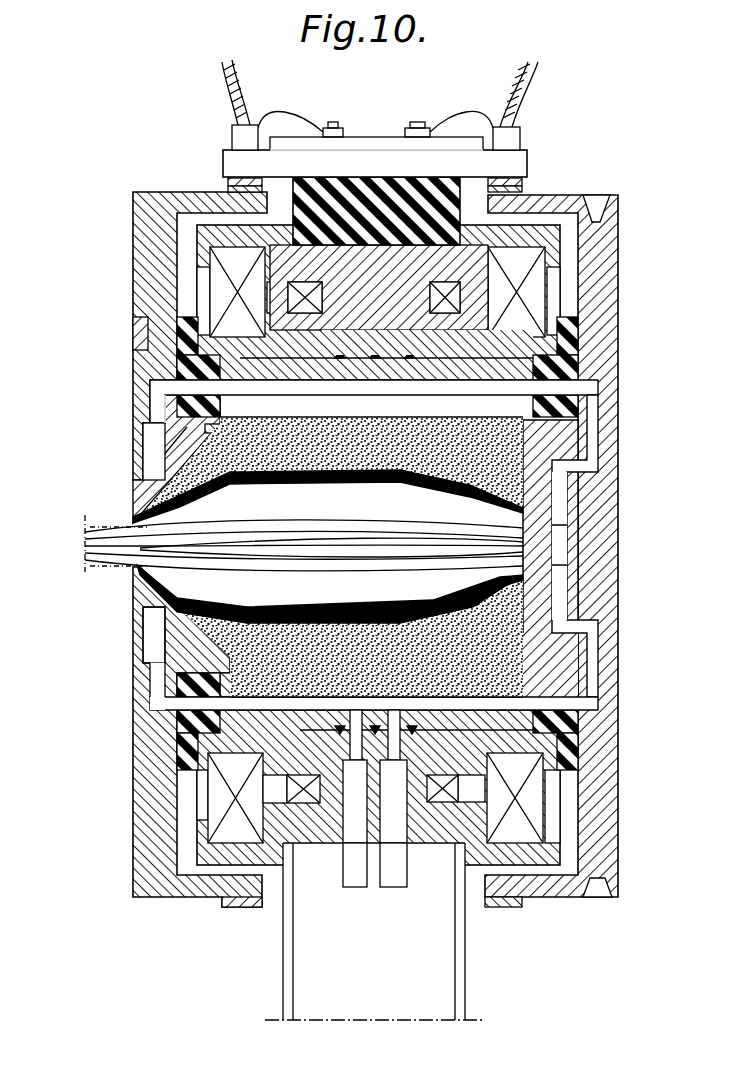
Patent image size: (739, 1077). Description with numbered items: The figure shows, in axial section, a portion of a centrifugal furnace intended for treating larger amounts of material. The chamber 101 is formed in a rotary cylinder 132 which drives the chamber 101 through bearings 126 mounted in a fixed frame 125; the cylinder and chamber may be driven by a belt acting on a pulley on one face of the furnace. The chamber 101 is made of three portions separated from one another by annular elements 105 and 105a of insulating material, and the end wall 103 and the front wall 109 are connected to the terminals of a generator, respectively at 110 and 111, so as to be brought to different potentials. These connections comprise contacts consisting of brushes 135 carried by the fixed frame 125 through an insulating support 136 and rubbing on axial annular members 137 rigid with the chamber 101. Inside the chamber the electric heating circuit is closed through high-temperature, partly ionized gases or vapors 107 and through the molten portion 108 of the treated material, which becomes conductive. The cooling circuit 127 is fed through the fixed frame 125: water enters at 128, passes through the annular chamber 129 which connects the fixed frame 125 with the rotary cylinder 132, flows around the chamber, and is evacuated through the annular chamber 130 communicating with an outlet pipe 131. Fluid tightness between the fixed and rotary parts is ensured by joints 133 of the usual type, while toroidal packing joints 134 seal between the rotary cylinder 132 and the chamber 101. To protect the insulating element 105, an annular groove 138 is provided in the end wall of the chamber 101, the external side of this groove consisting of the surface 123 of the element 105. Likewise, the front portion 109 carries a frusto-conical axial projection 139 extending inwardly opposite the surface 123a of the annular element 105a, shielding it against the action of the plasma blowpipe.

The chamber 101 is at (430, 410).
The end wall 103 is at (532, 517).
The annular element of insulating material 105 is at (578, 337).
The annular element of insulating material 105a is at (180, 328).
The gases or vapors 107 is at (283, 528).
The molten portion of the treated material 108 is at (280, 608).
The front wall 109 is at (140, 464).
The connection contact 110 is at (505, 122).
The connection contact 111 is at (250, 122).
The surface of insulating annular element 123 is at (598, 426).
The surface of annular element 123a is at (163, 388).
The fixed frame 125 is at (417, 258).
The bearings 126 is at (435, 286).
The cooling circuit 127 is at (558, 585).
The water inlet 128 is at (357, 862).
The annular chamber 129 is at (360, 778).
The annular chamber 130 is at (393, 780).
The outlet pipe 131 is at (393, 863).
The rotary cylinder 132 is at (455, 338).
The joints 133 is at (302, 797).
The toroidal packing joints 134 is at (412, 728).
The brushes 135 is at (232, 181).
The insulating support 136 is at (364, 188).
The axial annular members 137 is at (232, 190).
The annular groove 138 is at (560, 668).
The frusto conical axial projection 139 is at (228, 428).